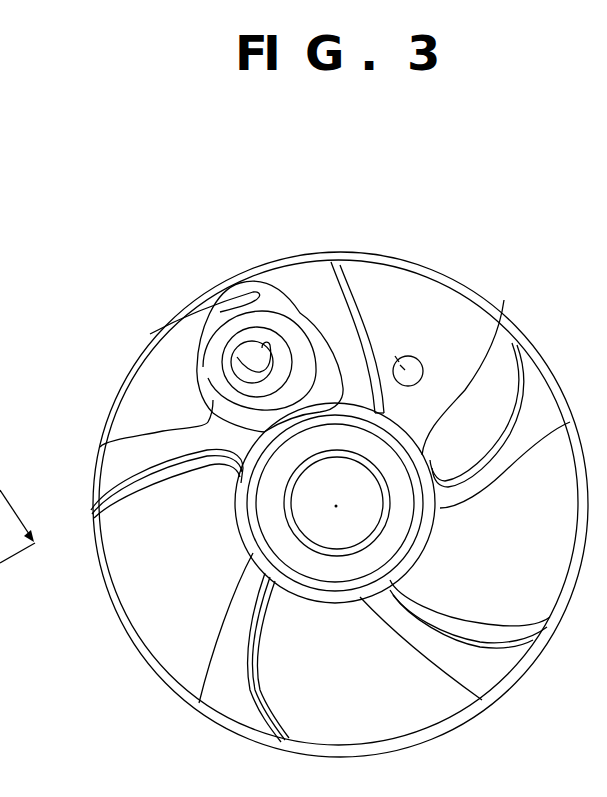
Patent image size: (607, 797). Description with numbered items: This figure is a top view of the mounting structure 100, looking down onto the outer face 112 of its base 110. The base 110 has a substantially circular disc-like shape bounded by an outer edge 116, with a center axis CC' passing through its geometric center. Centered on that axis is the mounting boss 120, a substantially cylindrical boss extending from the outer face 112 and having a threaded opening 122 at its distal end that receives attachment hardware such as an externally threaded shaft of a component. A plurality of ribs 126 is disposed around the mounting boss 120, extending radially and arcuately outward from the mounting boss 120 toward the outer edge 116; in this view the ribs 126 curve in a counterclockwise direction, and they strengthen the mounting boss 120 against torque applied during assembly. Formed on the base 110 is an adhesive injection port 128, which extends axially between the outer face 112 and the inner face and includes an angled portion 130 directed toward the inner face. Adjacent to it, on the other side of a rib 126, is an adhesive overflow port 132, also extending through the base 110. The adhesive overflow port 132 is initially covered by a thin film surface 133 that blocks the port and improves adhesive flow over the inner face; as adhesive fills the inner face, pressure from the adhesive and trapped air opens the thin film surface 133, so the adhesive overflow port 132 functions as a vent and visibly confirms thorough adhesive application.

The mounting structure 100 is at (403, 182).
The base 110 is at (363, 279).
The outer face 112 is at (192, 557).
The outer edge 116 is at (447, 723).
The mounting boss 120 is at (504, 300).
The threaded opening 122 is at (362, 466).
The ribs 126 is at (313, 290).
The adhesive injection port 128 is at (247, 365).
The angled portion 130 is at (308, 338).
The adhesive overflow port 132 is at (407, 356).
The thin film surface 133 is at (398, 360).